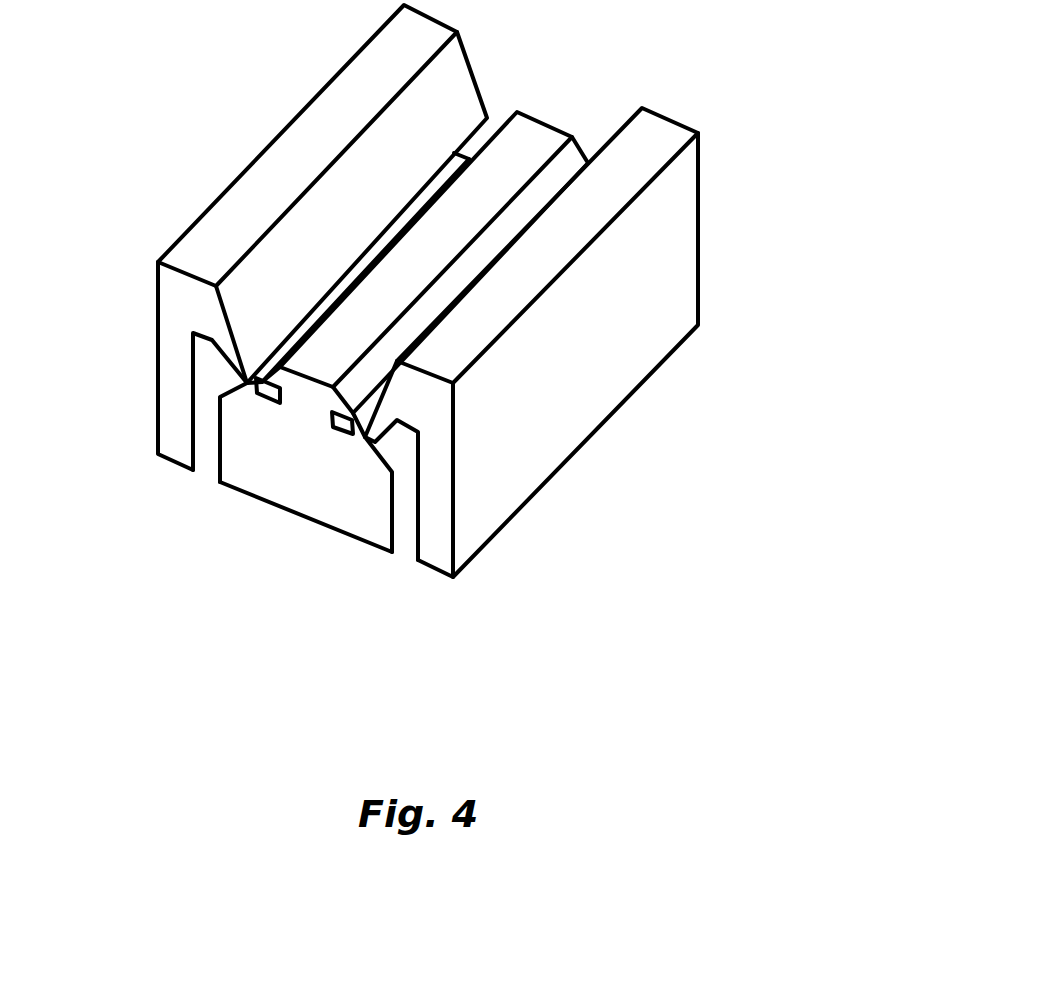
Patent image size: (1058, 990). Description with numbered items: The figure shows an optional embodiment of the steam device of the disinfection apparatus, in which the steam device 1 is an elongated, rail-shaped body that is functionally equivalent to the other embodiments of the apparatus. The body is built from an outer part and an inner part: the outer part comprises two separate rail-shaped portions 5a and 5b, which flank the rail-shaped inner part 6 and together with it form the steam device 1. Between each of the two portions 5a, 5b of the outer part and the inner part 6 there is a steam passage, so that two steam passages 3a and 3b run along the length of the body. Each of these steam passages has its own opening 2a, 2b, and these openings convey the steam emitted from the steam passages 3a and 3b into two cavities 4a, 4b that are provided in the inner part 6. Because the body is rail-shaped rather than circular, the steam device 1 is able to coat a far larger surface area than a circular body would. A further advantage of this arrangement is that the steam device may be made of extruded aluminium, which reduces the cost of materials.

The steam device 1 is at (551, 121).
The opening 2a is at (488, 137).
The opening 2b is at (596, 145).
The steam passage 3a is at (207, 475).
The steam passage 3b is at (405, 550).
The cavity 4a is at (240, 392).
The cavity 4b is at (345, 428).
The rail-shaped portion 5a is at (173, 403).
The rail-shaped portion 5b is at (432, 495).
The inner part 6 is at (307, 500).